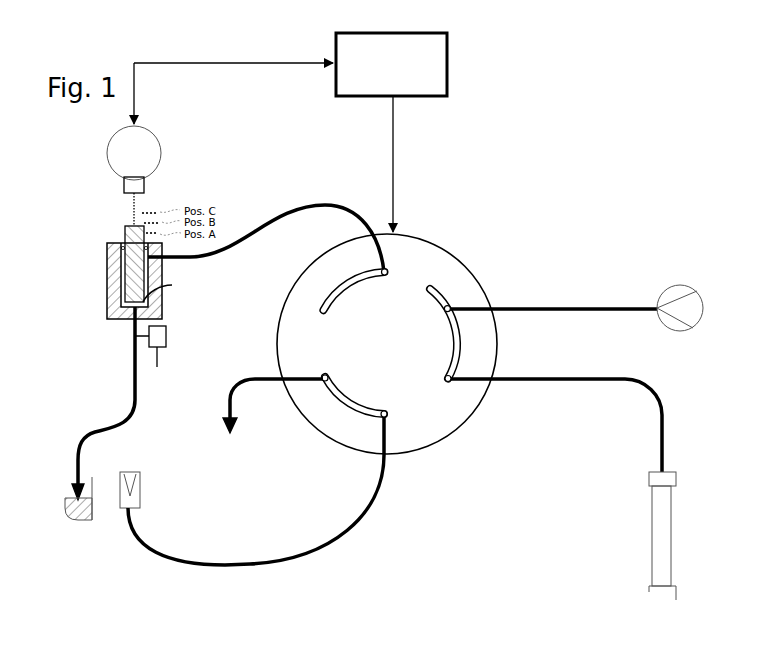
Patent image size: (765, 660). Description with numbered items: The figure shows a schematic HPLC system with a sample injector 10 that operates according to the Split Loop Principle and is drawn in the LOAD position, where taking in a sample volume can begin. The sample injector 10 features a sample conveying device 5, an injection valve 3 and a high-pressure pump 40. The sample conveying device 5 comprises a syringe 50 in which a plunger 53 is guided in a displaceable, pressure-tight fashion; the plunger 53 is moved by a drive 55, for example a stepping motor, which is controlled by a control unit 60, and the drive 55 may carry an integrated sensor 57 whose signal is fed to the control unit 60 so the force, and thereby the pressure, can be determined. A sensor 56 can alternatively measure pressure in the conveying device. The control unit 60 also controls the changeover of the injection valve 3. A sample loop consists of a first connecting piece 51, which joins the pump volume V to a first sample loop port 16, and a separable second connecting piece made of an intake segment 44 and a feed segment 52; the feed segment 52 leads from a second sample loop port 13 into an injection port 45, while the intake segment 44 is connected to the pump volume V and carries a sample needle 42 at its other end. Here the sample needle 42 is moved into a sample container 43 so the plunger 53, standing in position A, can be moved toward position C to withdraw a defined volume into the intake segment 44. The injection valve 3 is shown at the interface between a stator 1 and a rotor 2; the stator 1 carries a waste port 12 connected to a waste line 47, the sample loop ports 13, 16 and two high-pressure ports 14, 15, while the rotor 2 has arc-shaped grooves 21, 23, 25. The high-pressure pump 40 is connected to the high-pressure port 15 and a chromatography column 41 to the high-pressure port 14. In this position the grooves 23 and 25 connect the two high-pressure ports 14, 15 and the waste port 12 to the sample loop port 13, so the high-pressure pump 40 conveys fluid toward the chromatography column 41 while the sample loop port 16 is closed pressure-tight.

The stator 1 is at (342, 369).
The rotor 2 is at (387, 369).
The injection valve 3 is at (448, 441).
The sample conveying device 5 is at (87, 190).
The sample injector 10 is at (508, 197).
The waste port 12 is at (322, 384).
The second sample loop port 13 is at (380, 420).
The high-pressure port 14 is at (452, 384).
The high-pressure port 15 is at (452, 305).
The first sample loop port 16 is at (388, 266).
The arc-shaped groove 21 is at (350, 294).
The arc-shaped groove 23 is at (350, 395).
The arc-shaped groove 25 is at (448, 347).
The high-pressure pump 40 is at (668, 322).
The chromatography column 41 is at (672, 520).
The sample needle 42 is at (70, 484).
The sample container 43 is at (78, 520).
The intake segment 44 is at (133, 352).
The injection port 45 is at (142, 490).
The waste line 47 is at (226, 416).
The syringe 50 is at (106, 288).
The first connecting piece 51 is at (325, 205).
The feed segment 52 is at (340, 525).
The plunger 53 is at (124, 232).
The drive 55 is at (161, 153).
The sensor 56 is at (152, 361).
The integrated sensor 57 is at (144, 185).
The control unit 60 is at (430, 62).
The pump volume V is at (166, 289).